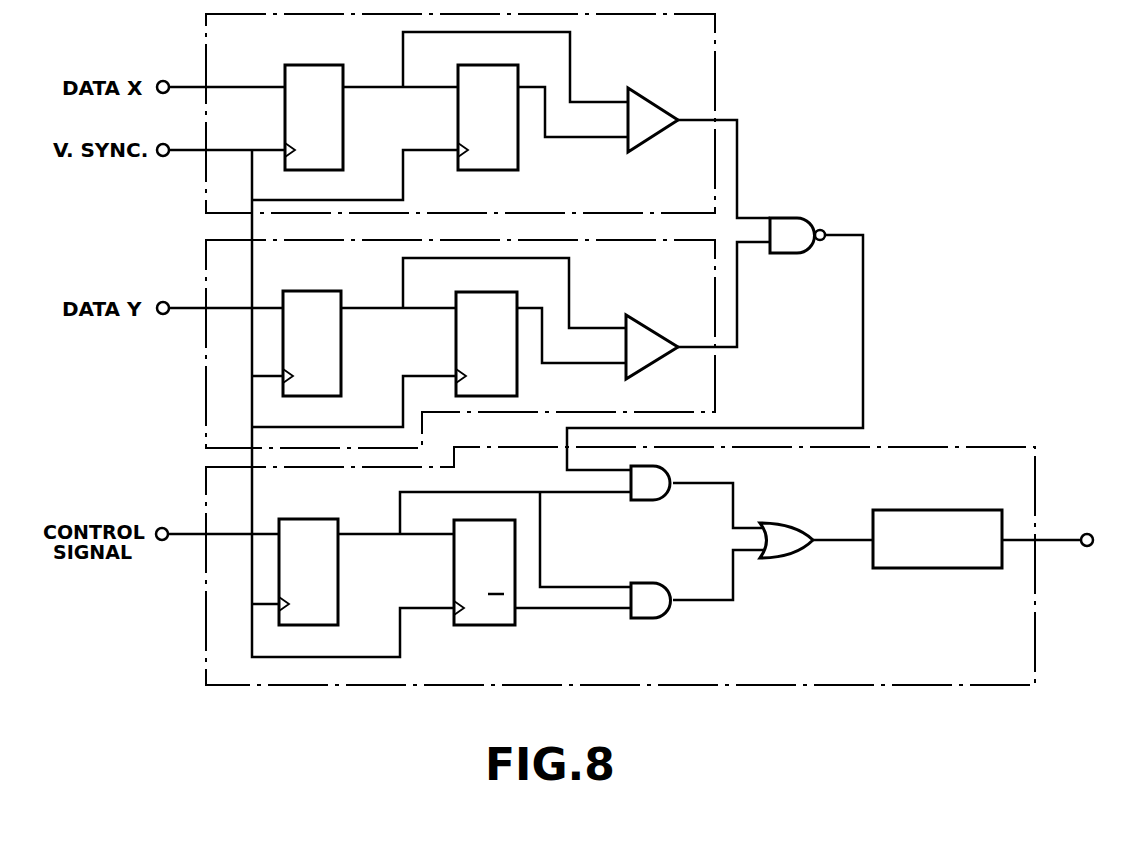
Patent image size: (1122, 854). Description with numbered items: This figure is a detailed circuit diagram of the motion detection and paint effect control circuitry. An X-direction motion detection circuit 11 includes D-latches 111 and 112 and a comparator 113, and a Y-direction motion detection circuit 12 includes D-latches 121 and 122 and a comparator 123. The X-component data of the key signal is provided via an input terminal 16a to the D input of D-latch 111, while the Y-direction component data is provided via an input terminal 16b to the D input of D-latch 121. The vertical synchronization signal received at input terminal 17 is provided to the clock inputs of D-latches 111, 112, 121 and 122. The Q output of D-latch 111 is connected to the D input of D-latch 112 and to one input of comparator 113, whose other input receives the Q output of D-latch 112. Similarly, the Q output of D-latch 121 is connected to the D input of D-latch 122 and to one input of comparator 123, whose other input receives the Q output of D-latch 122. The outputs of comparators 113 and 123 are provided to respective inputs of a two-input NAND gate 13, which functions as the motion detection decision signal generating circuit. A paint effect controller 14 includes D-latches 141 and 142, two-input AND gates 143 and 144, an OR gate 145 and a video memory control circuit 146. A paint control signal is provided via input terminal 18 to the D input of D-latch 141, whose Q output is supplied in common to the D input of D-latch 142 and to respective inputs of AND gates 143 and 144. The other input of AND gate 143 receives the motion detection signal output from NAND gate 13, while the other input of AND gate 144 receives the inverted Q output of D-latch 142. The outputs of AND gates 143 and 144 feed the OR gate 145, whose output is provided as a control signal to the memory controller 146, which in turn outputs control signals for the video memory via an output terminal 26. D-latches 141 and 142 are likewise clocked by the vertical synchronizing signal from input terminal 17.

The X-direction motion detection circuit 11 is at (715, 50).
The Y-direction motion detection circuit 12 is at (715, 395).
The NAND gate 13 is at (790, 253).
The paint effect controller 14 is at (760, 685).
The input terminal 16a is at (163, 80).
The input terminal 16b is at (163, 300).
The input terminal 17 is at (163, 157).
The input terminal 18 is at (162, 527).
The output terminal 26 is at (1087, 533).
The D-latch 111 is at (313, 65).
The D-latch 112 is at (518, 165).
The comparator 113 is at (650, 100).
The D-latch 121 is at (313, 291).
The D-latch 122 is at (517, 388).
The comparator 123 is at (652, 327).
The D-latch 141 is at (310, 519).
The D-latch 142 is at (515, 625).
The AND gate 143 is at (645, 500).
The AND gate 144 is at (660, 618).
The OR gate 145 is at (785, 525).
The video memory control circuit 146 is at (938, 510).